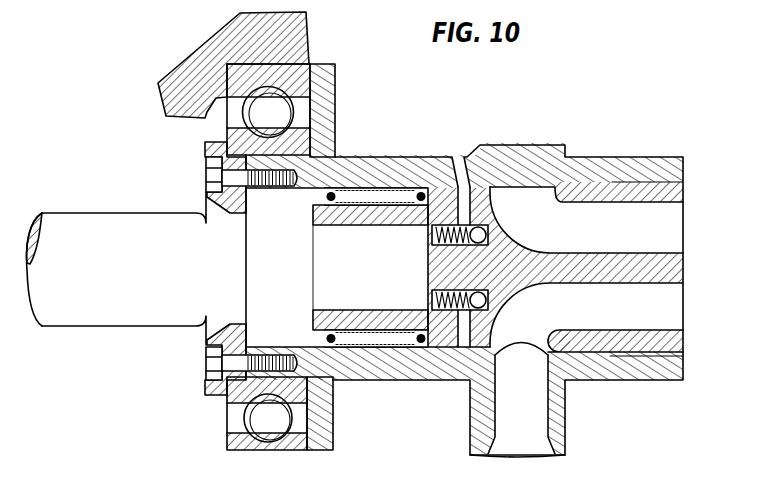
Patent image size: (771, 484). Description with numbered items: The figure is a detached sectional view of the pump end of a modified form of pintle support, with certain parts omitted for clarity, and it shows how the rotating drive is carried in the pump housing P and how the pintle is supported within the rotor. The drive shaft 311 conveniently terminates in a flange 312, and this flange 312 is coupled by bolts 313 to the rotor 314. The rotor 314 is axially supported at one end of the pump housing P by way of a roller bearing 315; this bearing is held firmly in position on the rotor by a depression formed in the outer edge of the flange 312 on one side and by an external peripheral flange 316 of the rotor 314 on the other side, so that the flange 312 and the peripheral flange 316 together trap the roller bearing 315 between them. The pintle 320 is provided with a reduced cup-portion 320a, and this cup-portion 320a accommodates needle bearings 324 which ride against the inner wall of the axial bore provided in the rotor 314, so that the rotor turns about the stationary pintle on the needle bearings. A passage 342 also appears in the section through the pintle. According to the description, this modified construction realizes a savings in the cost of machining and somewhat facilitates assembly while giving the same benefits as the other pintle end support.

The drive shaft 311 is at (153, 292).
The flange 312 is at (222, 141).
The bolts 313 is at (212, 180).
The rotor 314 is at (228, 395).
The roller bearing 315 is at (237, 72).
The external peripheral flange 316 is at (343, 156).
The pintle 320 is at (644, 265).
The reduced cup-portion 320a is at (368, 330).
The needle bearings 324 is at (385, 197).
The passage 342 is at (462, 209).
The pump housing P is at (298, 34).